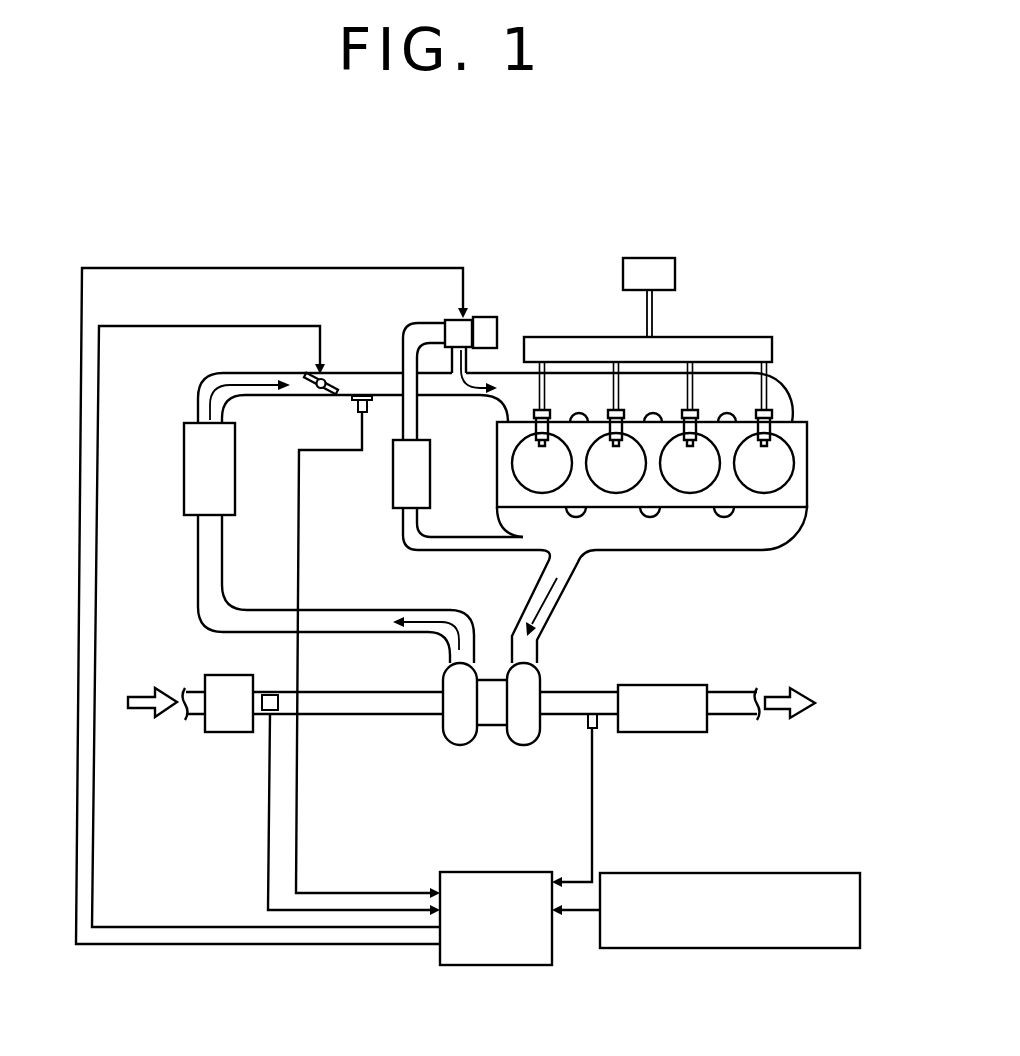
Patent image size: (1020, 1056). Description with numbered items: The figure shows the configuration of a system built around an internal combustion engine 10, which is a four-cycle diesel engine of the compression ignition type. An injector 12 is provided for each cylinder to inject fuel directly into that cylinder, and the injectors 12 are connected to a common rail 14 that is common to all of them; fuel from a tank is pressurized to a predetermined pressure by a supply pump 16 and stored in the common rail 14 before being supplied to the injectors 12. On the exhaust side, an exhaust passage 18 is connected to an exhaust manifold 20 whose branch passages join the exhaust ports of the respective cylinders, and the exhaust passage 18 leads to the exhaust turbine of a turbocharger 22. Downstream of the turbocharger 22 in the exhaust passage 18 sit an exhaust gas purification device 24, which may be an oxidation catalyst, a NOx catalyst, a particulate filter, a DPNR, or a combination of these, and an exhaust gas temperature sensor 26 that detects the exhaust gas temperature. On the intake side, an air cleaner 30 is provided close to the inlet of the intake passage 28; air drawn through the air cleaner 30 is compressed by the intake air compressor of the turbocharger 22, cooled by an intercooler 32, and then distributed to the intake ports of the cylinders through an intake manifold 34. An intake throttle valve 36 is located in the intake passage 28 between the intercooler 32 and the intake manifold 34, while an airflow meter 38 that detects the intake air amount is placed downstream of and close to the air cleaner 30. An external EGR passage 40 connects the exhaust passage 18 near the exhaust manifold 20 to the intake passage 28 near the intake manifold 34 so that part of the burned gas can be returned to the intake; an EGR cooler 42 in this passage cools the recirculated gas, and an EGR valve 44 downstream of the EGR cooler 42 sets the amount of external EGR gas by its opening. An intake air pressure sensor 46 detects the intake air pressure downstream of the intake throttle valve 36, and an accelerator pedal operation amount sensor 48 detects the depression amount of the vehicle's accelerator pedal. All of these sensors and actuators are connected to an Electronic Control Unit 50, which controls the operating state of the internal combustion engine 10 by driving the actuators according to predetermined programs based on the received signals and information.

The internal combustion engine 10 is at (744, 262).
The injector 12 is at (775, 421).
The common rail 14 is at (745, 337).
The supply pump 16 is at (660, 258).
The exhaust passage 18 is at (577, 573).
The exhaust manifold 20 is at (737, 552).
The turbocharger 22 is at (488, 731).
The exhaust gas purification device 24 is at (690, 685).
The exhaust gas temperature sensor 26 is at (595, 729).
The intake passage 28 is at (358, 373).
The air cleaner 30 is at (212, 675).
The intercooler 32 is at (235, 477).
The intake manifold 34 is at (778, 380).
The intake throttle valve 36 is at (307, 377).
The airflow meter 38 is at (270, 695).
The external EGR passage 40 is at (419, 413).
The EGR cooler 42 is at (392, 483).
The EGR valve 44 is at (486, 317).
The intake air pressure sensor 46 is at (352, 407).
The accelerator pedal operation amount sensor 48 is at (825, 873).
The Electronic Control Unit (ECU) 50 is at (497, 872).